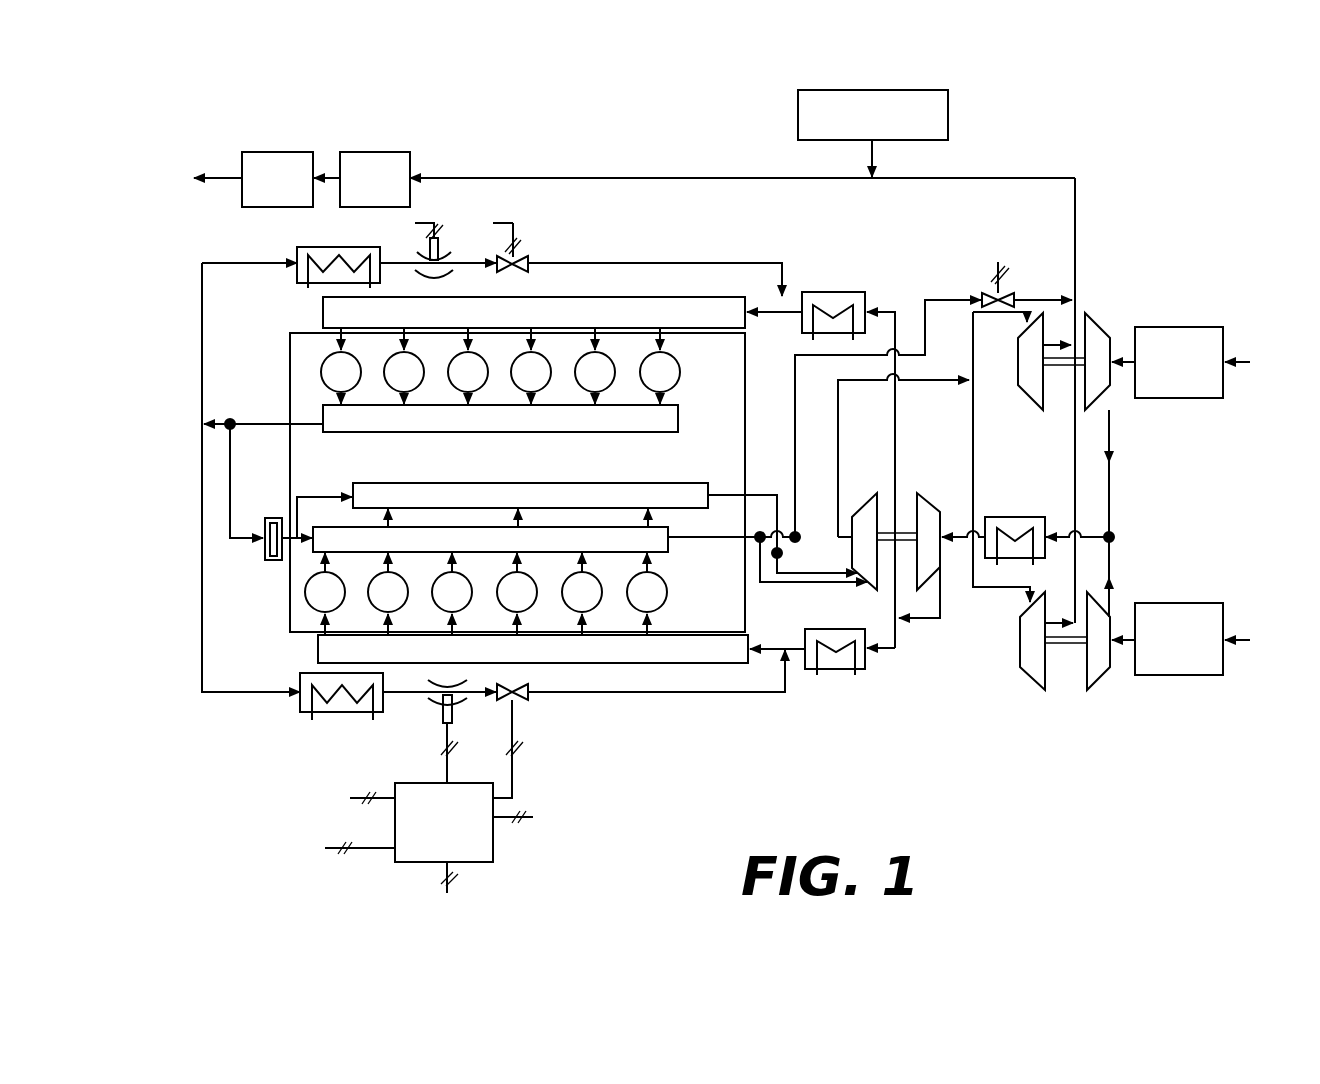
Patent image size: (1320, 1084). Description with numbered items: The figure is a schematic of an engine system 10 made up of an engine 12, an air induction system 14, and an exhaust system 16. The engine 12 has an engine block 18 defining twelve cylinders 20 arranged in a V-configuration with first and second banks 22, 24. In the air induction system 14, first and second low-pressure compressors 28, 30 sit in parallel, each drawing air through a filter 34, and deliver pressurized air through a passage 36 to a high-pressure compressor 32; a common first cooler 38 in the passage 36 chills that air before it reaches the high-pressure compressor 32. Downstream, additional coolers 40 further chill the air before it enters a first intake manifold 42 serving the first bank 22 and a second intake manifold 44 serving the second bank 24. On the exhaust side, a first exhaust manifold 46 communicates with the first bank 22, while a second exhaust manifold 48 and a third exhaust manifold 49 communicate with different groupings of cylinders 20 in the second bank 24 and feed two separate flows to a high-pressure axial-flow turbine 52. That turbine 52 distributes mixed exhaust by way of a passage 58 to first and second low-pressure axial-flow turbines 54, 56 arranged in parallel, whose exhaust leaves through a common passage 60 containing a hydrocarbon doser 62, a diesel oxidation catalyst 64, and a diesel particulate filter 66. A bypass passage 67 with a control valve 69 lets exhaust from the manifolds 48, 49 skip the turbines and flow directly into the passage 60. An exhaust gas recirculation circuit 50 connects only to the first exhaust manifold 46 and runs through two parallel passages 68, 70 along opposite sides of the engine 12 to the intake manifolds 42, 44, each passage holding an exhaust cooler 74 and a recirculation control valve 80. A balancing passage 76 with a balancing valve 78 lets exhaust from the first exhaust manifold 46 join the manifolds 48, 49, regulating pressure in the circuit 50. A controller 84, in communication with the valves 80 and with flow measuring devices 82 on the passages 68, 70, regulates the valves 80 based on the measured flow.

The engine system 10 is at (1099, 137).
The engine 12 is at (257, 636).
The air induction system 14 is at (1141, 724).
The exhaust system 16 is at (892, 684).
The engine block 18 is at (692, 469).
The cylinders 20 is at (656, 602).
The first bank 22 is at (705, 376).
The second bank 24 is at (690, 586).
The first low-pressure compressor 28 is at (1099, 400).
The second low-pressure compressor 30 is at (1106, 690).
The high-pressure compressor 32 is at (935, 580).
The filter 34 is at (1176, 398).
The passage 36 is at (1112, 545).
The first cooler 38 is at (1025, 558).
The coolers 40 is at (838, 290).
The first intake manifold 42 is at (484, 324).
The second intake manifold 44 is at (489, 660).
The first exhaust manifold 46 is at (484, 430).
The second exhaust manifold 48 is at (519, 507).
The third exhaust manifold 49 is at (471, 551).
The exhaust gas recirculation circuit 50 is at (196, 746).
The high-pressure axial-flow turbine 52 is at (858, 508).
The first low-pressure axial-flow turbine 54 is at (1016, 386).
The second low-pressure axial-flow turbine 56 is at (1030, 690).
The passage 58 is at (933, 374).
The common passage 60 is at (1077, 216).
The hydrocarbon doser 62 is at (950, 112).
The diesel oxidation catalyst 64 is at (362, 152).
The diesel particulate filter 66 is at (266, 152).
The bypass passage 67 is at (797, 390).
The passage 68 is at (204, 340).
The control valve 69 is at (1012, 290).
The passage 70 is at (202, 604).
The exhaust coolers 74 is at (310, 238).
The balancing passage 76 is at (228, 538).
The balancing valve 78 is at (262, 552).
The recirculation control valve 80 is at (530, 270).
The flow measuring device 82 is at (450, 275).
The controller 84 is at (433, 832).